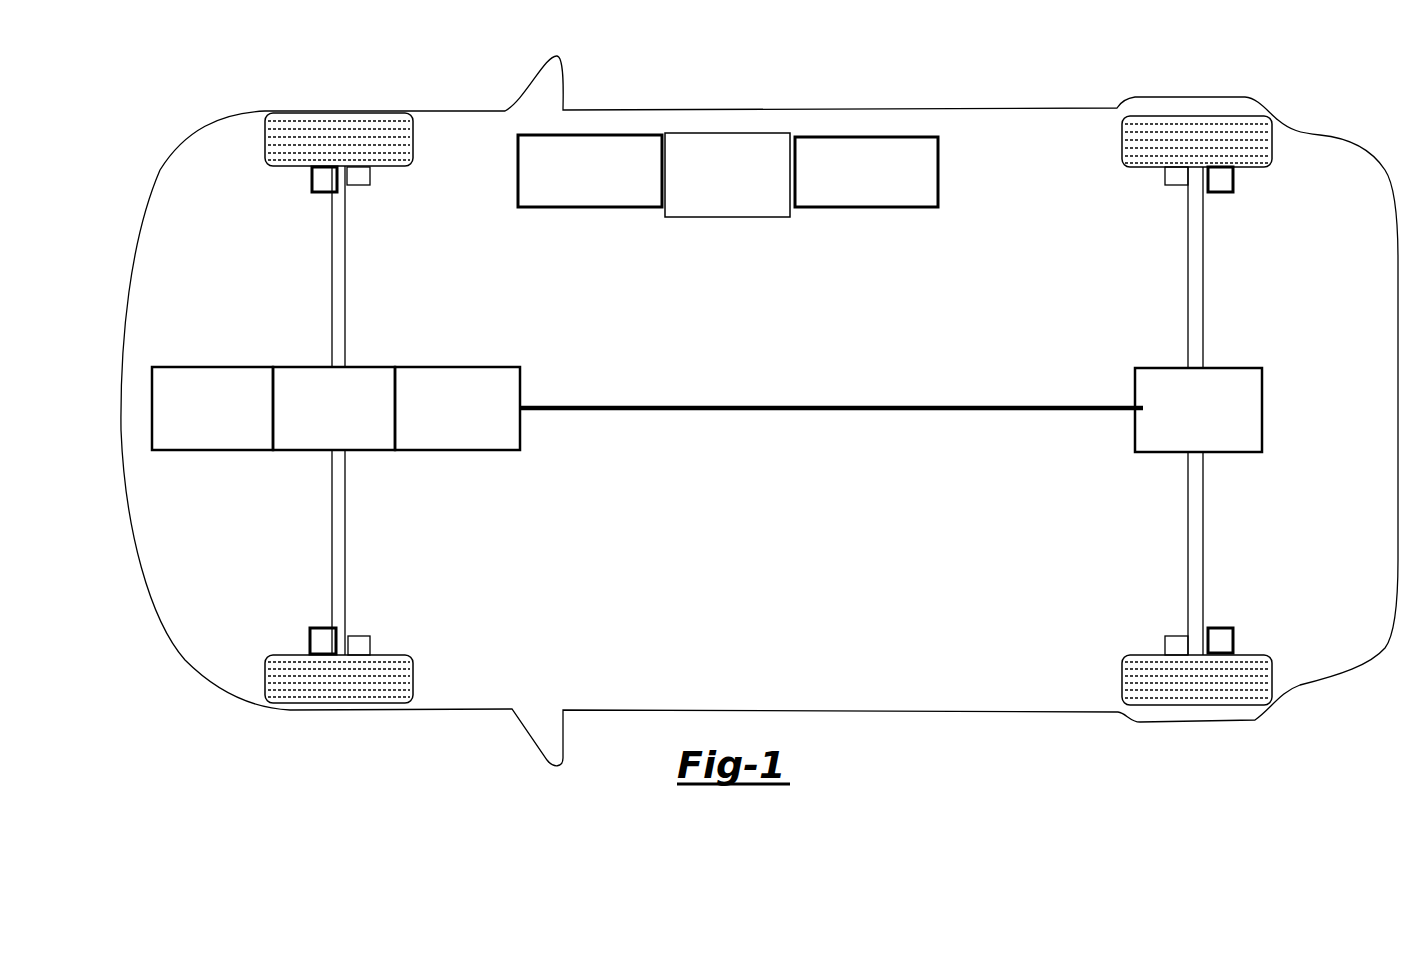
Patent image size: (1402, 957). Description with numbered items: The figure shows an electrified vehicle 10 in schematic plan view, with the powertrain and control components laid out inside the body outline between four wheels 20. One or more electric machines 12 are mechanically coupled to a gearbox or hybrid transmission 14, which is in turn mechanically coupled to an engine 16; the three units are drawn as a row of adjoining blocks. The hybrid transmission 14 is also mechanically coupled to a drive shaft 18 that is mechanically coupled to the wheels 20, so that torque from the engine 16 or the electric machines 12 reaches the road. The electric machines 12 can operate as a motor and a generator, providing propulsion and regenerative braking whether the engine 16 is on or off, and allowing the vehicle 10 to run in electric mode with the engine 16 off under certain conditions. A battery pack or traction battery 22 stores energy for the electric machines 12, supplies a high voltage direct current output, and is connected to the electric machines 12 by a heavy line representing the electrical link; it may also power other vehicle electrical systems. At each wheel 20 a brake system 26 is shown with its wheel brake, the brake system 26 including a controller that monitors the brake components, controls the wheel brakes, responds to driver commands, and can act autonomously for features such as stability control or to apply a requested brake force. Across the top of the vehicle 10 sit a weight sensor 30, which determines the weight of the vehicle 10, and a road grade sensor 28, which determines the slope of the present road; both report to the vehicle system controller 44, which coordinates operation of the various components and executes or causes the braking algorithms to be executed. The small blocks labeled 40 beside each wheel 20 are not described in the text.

The electrified vehicle 10 is at (410, 108).
The electric machines 12 is at (463, 367).
The hybrid transmission 14 is at (302, 367).
The engine 16 is at (214, 367).
The drive shaft 18 is at (331, 613).
The wheels 20 is at (294, 169).
The traction battery 22 is at (1265, 410).
The brake system 26 is at (330, 192).
The road grade sensor 28 is at (868, 210).
The weight sensor 30 is at (590, 210).
The brake 40 is at (354, 186).
The controller 44 is at (727, 219).